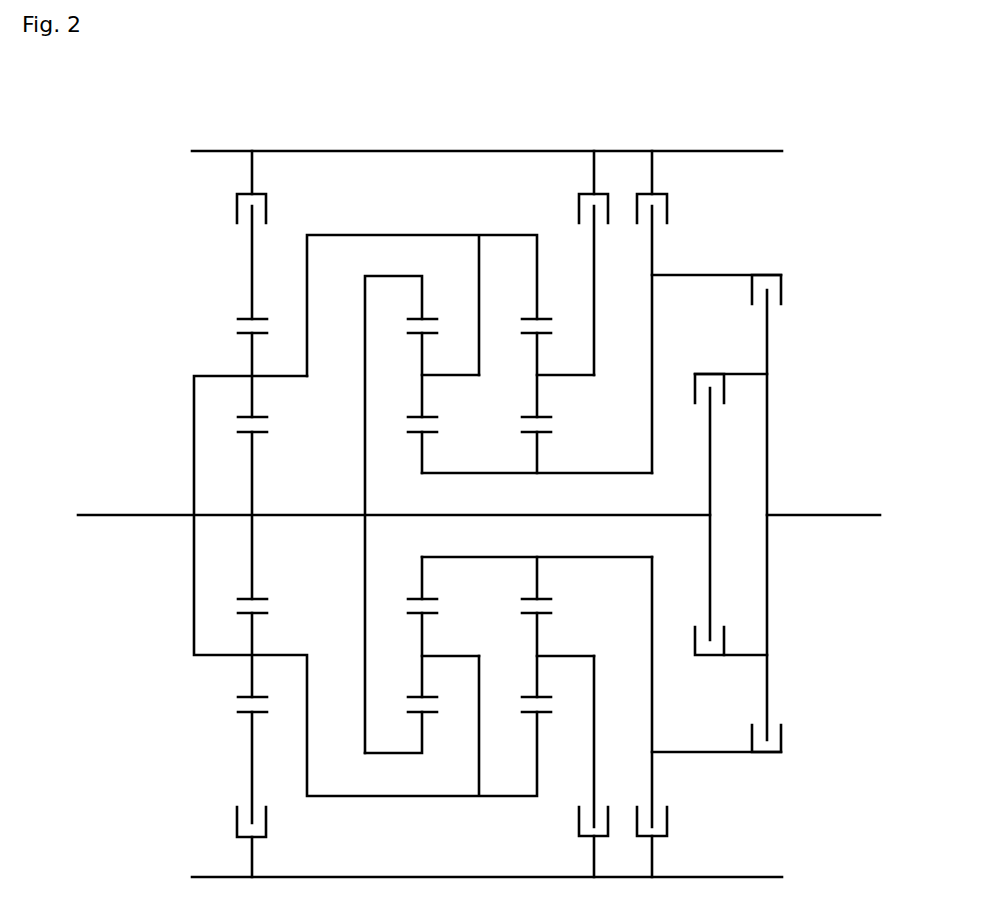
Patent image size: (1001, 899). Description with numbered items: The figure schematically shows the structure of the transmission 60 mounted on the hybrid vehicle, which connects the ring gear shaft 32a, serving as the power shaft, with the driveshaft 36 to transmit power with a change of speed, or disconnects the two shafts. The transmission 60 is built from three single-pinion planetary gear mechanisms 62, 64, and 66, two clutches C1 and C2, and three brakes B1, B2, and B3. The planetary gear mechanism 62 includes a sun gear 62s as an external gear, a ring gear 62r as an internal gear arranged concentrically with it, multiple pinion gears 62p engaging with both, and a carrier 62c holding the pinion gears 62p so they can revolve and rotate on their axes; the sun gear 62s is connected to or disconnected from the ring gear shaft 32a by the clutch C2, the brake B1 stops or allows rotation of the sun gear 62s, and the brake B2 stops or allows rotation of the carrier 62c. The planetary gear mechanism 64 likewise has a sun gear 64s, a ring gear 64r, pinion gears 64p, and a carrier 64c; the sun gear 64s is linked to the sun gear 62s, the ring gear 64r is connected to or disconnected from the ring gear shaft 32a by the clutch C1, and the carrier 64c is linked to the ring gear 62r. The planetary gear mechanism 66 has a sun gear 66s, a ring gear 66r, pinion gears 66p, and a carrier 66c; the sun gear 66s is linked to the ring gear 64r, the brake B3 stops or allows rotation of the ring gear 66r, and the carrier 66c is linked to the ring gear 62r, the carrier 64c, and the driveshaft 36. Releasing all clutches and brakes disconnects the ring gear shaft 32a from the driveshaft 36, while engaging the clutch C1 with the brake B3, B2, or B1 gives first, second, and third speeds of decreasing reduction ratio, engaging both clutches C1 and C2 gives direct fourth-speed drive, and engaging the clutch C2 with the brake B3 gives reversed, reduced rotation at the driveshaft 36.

The transmission 60 is at (828, 182).
The planetary gear mechanism 62 is at (541, 214).
The ring gear 62r is at (566, 290).
The pinion gears 62p is at (541, 412).
The carrier 62c is at (546, 377).
The sun gear 62s is at (541, 459).
The planetary gear mechanism 64 is at (415, 253).
The ring gear 64r is at (424, 306).
The pinion gears 64p is at (426, 412).
The carrier 64c is at (431, 377).
The sun gear 64s is at (426, 459).
The planetary gear mechanism 66 is at (163, 319).
The ring gear 66r is at (250, 292).
The pinion gears 66p is at (250, 345).
The carrier 66c is at (262, 377).
The sun gear 66s is at (254, 456).
The brake B1 is at (667, 206).
The brake B2 is at (579, 207).
The brake B3 is at (237, 206).
The clutch C1 is at (710, 373).
The clutch C2 is at (767, 274).
The driveshaft 36 is at (146, 512).
The ring gear shaft 32a is at (844, 513).